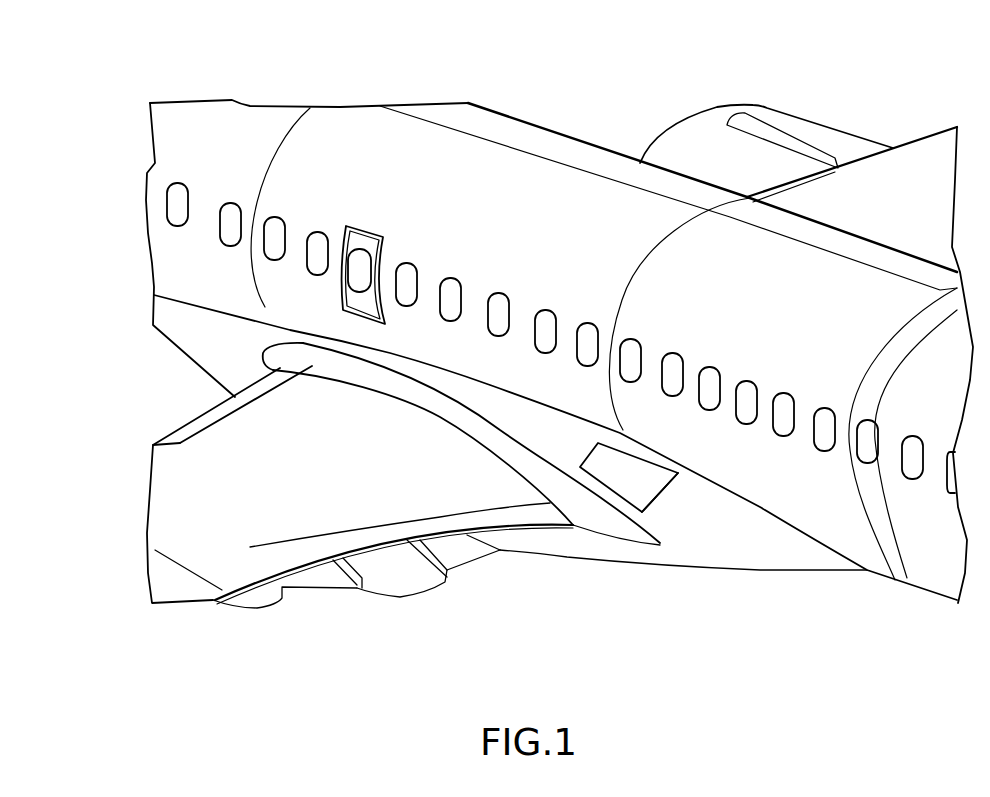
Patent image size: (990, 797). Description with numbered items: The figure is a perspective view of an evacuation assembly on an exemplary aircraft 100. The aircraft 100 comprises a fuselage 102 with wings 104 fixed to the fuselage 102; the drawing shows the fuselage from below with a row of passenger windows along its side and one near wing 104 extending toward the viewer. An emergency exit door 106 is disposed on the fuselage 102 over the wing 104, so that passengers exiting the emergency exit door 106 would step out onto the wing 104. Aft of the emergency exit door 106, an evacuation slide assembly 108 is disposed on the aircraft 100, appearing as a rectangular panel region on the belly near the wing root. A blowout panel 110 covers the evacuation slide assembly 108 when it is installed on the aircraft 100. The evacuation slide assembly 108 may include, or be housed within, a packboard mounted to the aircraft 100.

The aircraft 100 is at (93, 88).
The fuselage 102 is at (175, 265).
The wing 104 is at (348, 463).
The emergency exit door 106 is at (348, 224).
The evacuation slide assembly 108 is at (657, 493).
The blowout panel 110 is at (643, 493).